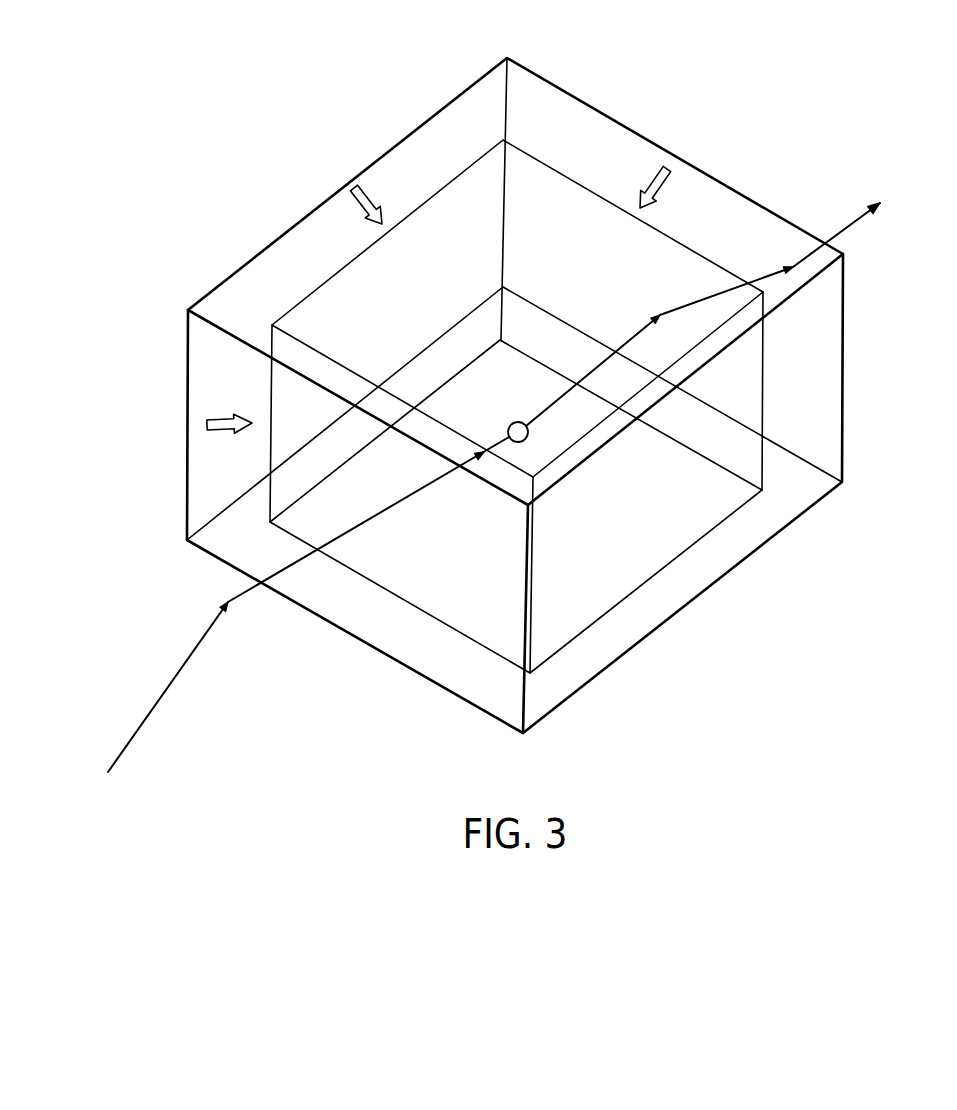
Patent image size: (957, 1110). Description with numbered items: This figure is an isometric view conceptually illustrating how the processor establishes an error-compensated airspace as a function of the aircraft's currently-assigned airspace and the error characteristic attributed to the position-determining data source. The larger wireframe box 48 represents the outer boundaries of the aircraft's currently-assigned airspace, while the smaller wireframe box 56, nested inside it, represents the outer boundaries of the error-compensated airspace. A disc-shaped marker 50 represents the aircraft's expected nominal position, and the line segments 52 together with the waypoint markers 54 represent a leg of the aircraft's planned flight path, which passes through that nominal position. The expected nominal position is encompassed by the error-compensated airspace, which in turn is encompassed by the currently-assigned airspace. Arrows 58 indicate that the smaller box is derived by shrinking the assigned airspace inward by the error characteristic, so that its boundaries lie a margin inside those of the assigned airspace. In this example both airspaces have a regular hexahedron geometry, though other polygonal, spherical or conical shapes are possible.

The larger wireframe box 48 is at (824, 391).
The disc-shaped marker 50 is at (510, 427).
The line segments 52 is at (847, 225).
The waypoint markers 54 is at (877, 211).
The smaller wireframe box 56 is at (630, 526).
The arrows 58 is at (366, 192).